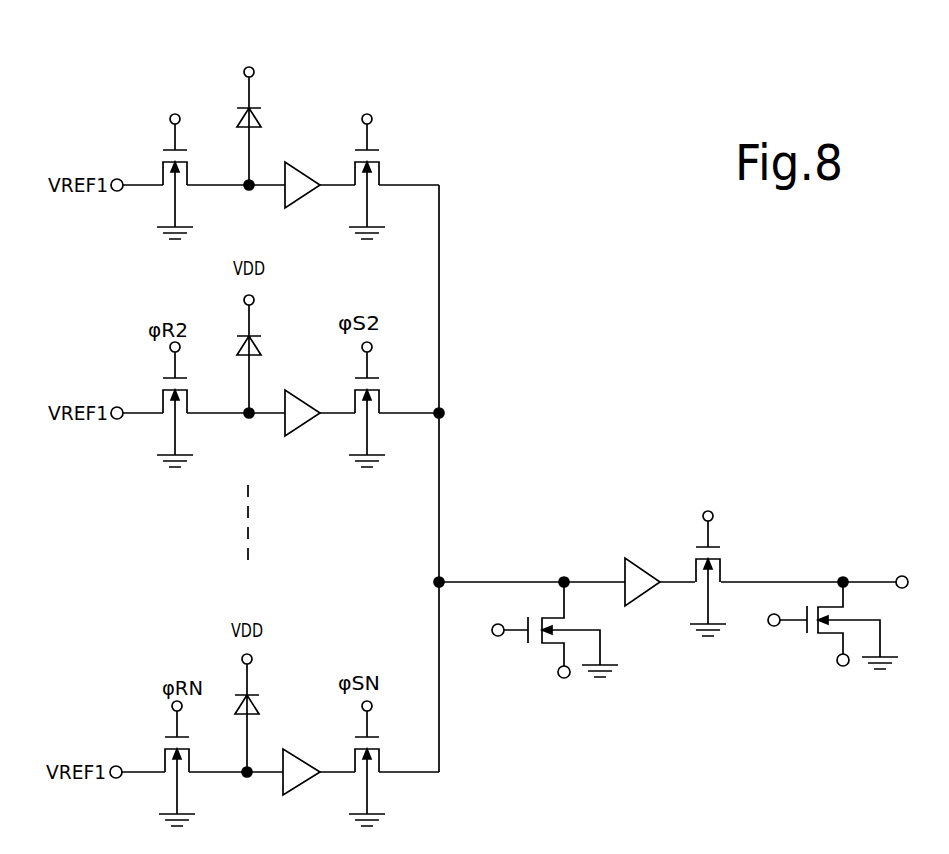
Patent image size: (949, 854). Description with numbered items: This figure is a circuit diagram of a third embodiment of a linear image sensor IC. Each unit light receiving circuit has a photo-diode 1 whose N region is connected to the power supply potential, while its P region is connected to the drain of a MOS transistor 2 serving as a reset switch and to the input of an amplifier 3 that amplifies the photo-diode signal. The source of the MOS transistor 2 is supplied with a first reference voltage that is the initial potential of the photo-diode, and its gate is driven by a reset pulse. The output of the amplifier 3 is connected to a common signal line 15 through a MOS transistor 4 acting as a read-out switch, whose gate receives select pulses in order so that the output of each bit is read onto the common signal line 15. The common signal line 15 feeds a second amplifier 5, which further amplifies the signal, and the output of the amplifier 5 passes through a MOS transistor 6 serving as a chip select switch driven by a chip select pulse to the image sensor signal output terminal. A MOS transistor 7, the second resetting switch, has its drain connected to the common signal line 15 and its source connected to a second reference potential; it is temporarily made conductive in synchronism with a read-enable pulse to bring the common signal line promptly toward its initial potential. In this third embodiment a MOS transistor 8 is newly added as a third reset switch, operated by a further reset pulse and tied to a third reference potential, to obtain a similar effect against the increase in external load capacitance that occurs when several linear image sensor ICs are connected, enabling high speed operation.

The photo-diode 1 is at (268, 120).
The MOS transistor 2 is at (143, 167).
The amplifier 3 is at (302, 203).
The MOS transistor 4 is at (387, 167).
The second amplifier 5 is at (628, 557).
The MOS transistor 6 is at (727, 557).
The MOS transistor 7 is at (528, 648).
The MOS transistor 8 is at (817, 650).
The common signal line 15 is at (447, 340).